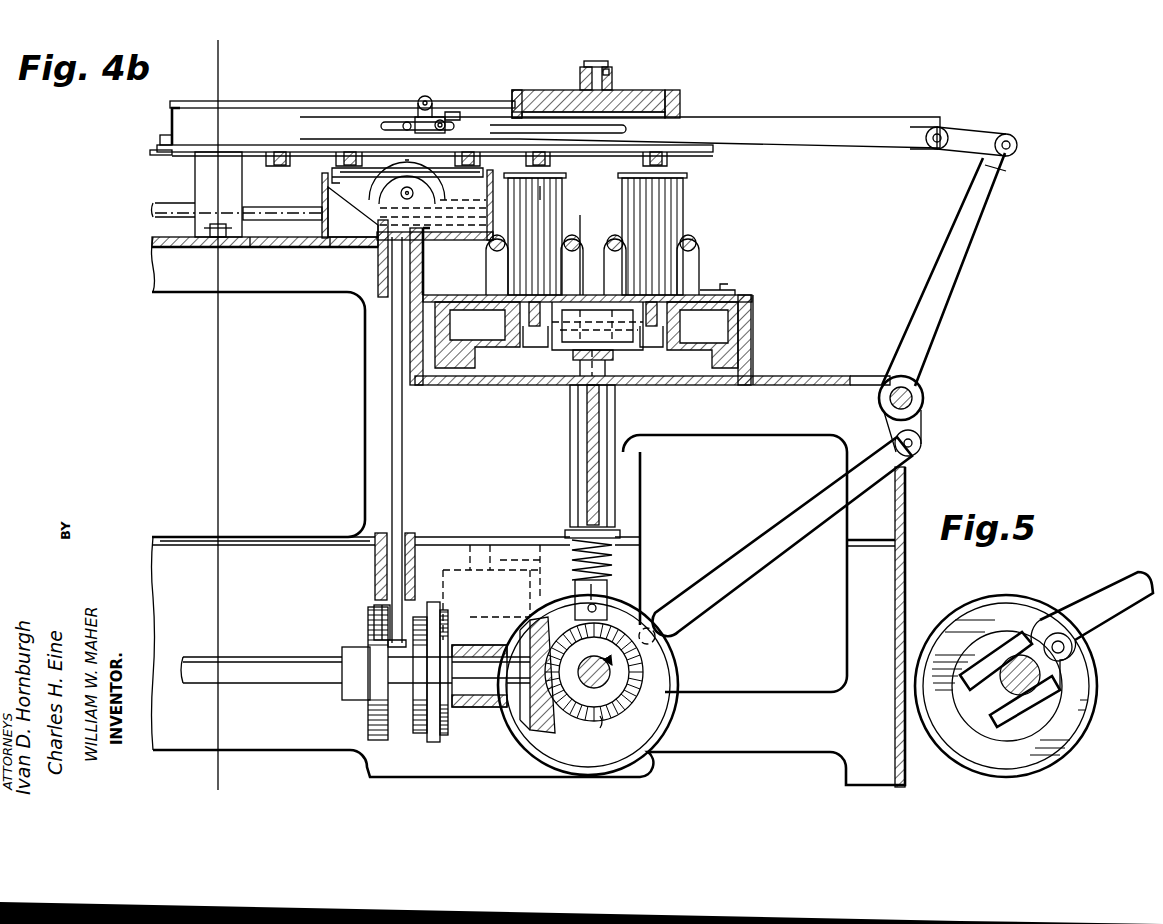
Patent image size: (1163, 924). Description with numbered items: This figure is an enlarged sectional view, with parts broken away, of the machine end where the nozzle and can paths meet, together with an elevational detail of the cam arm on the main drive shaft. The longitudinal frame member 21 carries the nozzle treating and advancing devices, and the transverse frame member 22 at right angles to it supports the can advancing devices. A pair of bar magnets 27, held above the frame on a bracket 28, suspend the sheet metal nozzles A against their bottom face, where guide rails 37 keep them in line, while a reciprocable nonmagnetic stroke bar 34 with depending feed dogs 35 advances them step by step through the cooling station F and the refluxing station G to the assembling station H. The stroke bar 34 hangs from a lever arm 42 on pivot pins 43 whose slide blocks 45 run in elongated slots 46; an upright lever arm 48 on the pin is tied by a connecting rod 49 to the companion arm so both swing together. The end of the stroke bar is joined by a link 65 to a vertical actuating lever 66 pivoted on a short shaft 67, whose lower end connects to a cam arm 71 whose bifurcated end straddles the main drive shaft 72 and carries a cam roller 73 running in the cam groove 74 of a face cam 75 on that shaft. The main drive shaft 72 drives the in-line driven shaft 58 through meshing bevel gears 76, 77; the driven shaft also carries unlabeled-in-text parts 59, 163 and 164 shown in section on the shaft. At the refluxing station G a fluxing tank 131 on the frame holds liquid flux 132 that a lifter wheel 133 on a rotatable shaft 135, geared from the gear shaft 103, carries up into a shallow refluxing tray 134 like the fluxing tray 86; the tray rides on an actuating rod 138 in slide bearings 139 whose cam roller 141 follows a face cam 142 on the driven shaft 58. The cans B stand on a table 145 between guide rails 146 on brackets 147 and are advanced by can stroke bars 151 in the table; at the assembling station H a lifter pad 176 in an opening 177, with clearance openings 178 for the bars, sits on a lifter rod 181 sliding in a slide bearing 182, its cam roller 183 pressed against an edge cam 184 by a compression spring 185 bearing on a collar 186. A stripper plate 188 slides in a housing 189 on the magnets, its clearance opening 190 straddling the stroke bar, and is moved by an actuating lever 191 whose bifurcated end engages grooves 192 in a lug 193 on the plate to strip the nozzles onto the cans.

In FIG. 4B, the longitudinal frame member 21 is at (258, 544).
In FIG. 4B, the transverse frame member 22 is at (758, 328).
In FIG. 4B, the bar magnets 27 is at (160, 139).
In FIG. 4B, the bracket 28 is at (208, 181).
In FIG. 4B, the stroke bar 34 is at (185, 128).
In FIG. 4B, the feed dogs 35 is at (342, 148).
In FIG. 4B, the guide rails 37 is at (158, 152).
In FIG. 4B, the lever arm 42 is at (422, 101).
In FIG. 4B, the pivot pins 43 is at (447, 126).
In FIG. 4B, the slide blocks 45 is at (390, 127).
In FIG. 4B, the elongated slots 46 is at (497, 120).
In FIG. 4B, the upright lever arm 48 is at (449, 113).
In FIG. 4B, the connecting rod 49 is at (312, 93).
In FIG. 4B, the driven shaft 58 is at (276, 672).
In FIG. 4B, the sleeve 59 is at (472, 708).
In FIG. 4B, the link 65 is at (966, 135).
In FIG. 4B, the actuating lever 66 is at (975, 214).
In FIG. 4B, the short shaft 67 is at (923, 397).
In FIG. 4B, the cam arm 71 is at (804, 520).
In FIG. 5, the cam arm 71 is at (1118, 592).
In FIG. 4B, the main drive shaft 72 is at (600, 672).
In FIG. 5, the main drive shaft 72 is at (1010, 683).
In FIG. 4B, the cam roller 73 is at (656, 636).
In FIG. 5, the cam roller 73 is at (1073, 653).
In FIG. 5, the cam groove 74 is at (965, 625).
In FIG. 4B, the face cam 75 is at (588, 685).
In FIG. 5, the face cam 75 is at (985, 603).
In FIG. 4B, the bevel gear 76 is at (640, 708).
In FIG. 4B, the bevel gear 77 is at (525, 730).
In FIG. 4B, the fluxing tray 86 is at (327, 185).
In FIG. 4B, the gear shaft 103 is at (170, 211).
In FIG. 4B, the fluxing tank 131 is at (330, 232).
In FIG. 4B, the liquid flux 132 is at (447, 240).
In FIG. 4B, the lifter wheel 133 is at (380, 176).
In FIG. 4B, the refluxing tray 134 is at (432, 182).
In FIG. 4B, the rotatable shaft 135 is at (400, 196).
In FIG. 4B, the actuating rod 138 is at (392, 364).
In FIG. 4B, the slide bearings 139 is at (380, 266).
In FIG. 4B, the cam roller 141 is at (373, 627).
In FIG. 4B, the face cam 142 is at (370, 718).
In FIG. 4B, the table 145 is at (740, 293).
In FIG. 4B, the guide rails 146 is at (568, 240).
In FIG. 4B, the brackets 147 is at (497, 250).
In FIG. 4B, the can stroke bars 151 is at (527, 314).
In FIG. 4B, the disc 163 is at (434, 742).
In FIG. 4B, the gear 164 is at (415, 724).
In FIG. 4B, the lifter pad 176 is at (522, 340).
In FIG. 4B, the opening 177 is at (500, 312).
In FIG. 4B, the clearance openings 178 is at (534, 344).
In FIG. 4B, the lifter rod 181 is at (600, 362).
In FIG. 4B, the slide bearing 182 is at (605, 433).
In FIG. 4B, the cam roller 183 is at (610, 606).
In FIG. 4B, the edge cam 184 is at (605, 738).
In FIG. 4B, the compression spring 185 is at (608, 540).
In FIG. 4B, the collar 186 is at (612, 572).
In FIG. 4B, the stripper plate 188 is at (648, 92).
In FIG. 4B, the housing 189 is at (682, 112).
In FIG. 4B, the clearance opening 190 is at (683, 100).
In FIG. 4B, the actuating lever 191 is at (580, 82).
In FIG. 4B, the grooves 192 is at (607, 68).
In FIG. 4B, the lug 193 is at (594, 61).
In FIG. 4B, the nozzles A is at (195, 790).
In FIG. 4B, the cans B is at (553, 205).
In FIG. 4B, the cooling station F is at (263, 240).
In FIG. 4B, the refluxing station G is at (330, 236).
In FIG. 4B, the assembling station H is at (537, 86).